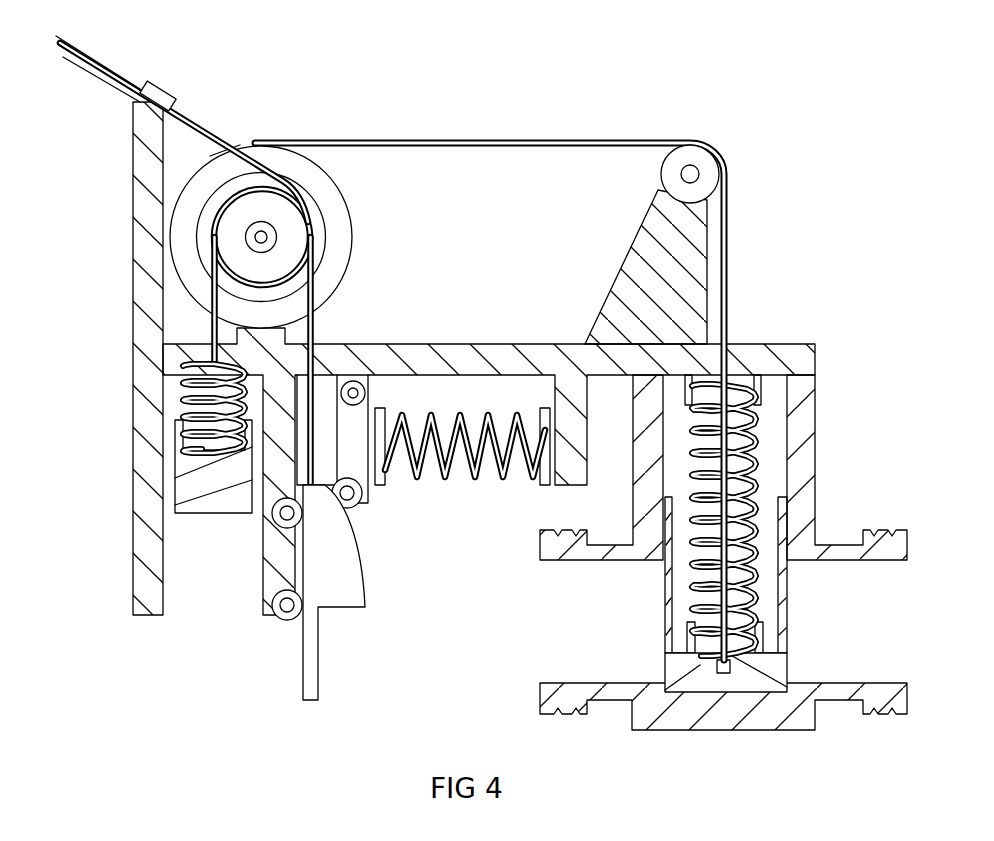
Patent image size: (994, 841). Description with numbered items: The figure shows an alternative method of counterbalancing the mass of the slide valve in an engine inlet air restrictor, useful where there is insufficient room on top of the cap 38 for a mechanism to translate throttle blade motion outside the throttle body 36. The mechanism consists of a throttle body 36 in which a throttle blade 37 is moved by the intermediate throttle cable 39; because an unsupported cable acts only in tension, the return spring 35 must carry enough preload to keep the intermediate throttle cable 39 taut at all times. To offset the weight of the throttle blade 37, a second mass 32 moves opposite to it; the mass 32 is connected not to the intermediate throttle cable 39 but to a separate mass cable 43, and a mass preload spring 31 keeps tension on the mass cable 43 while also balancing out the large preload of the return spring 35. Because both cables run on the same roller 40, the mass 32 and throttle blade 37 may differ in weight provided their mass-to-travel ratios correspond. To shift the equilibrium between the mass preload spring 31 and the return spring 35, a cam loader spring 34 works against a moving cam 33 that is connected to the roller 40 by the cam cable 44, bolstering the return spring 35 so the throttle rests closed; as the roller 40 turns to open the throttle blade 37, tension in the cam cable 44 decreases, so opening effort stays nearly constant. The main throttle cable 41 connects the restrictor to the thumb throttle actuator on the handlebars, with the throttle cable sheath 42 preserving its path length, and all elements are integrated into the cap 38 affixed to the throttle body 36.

The mass preload spring 31 is at (187, 398).
The mass 32 is at (220, 487).
The cam 33 is at (343, 580).
The cam loader spring 34 is at (445, 472).
The return spring 35 is at (747, 468).
The throttle body 36 is at (807, 477).
The throttle blade 37 is at (707, 680).
The cap 38 is at (790, 357).
The intermediate throttle cable 39 is at (725, 263).
The roller 40 is at (283, 160).
The main throttle cable 41 is at (197, 125).
The throttle cable sheath 42 is at (110, 67).
The mass cable 43 is at (213, 330).
The cam cable 44 is at (313, 300).